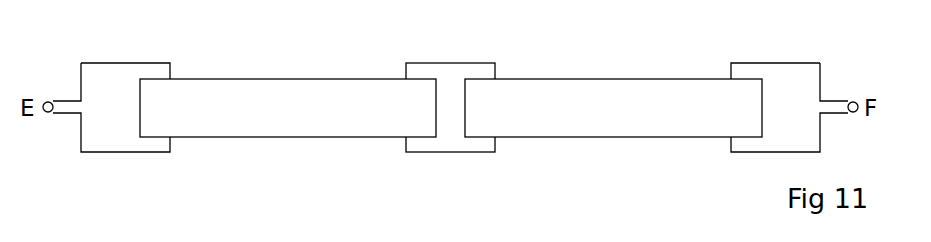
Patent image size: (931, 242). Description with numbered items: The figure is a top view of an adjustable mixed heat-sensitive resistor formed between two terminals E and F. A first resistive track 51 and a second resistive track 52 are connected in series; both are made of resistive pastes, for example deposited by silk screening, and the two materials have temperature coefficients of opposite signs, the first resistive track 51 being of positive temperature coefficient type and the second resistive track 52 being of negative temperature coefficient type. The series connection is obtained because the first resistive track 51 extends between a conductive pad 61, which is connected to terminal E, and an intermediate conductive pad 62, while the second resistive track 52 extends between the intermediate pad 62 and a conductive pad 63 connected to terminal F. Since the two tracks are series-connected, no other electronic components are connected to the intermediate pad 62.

The first resistive track 51 is at (285, 90).
The second resistive track 52 is at (633, 90).
The conductive pad 61 is at (115, 72).
The intermediate conductive pad 62 is at (450, 72).
The conductive pad 63 is at (778, 72).